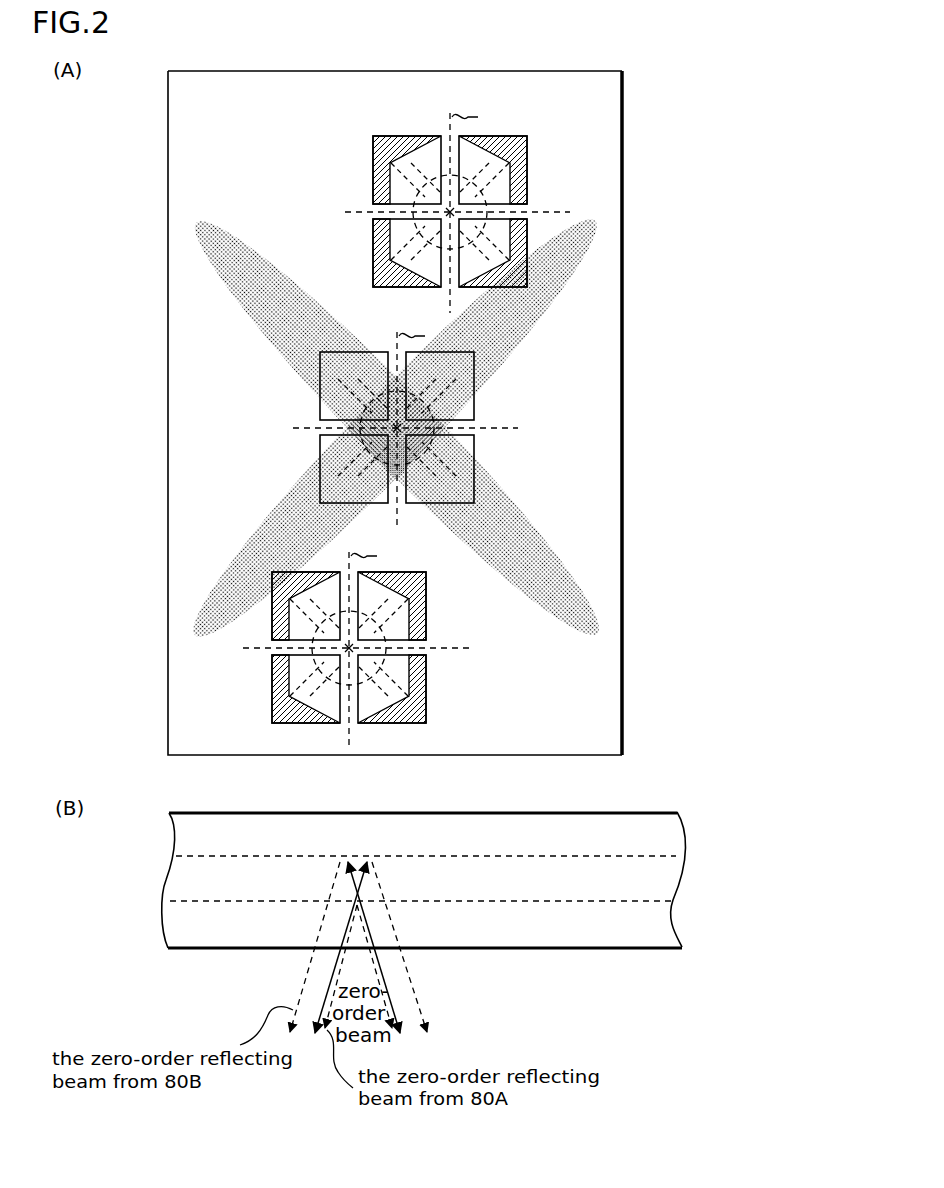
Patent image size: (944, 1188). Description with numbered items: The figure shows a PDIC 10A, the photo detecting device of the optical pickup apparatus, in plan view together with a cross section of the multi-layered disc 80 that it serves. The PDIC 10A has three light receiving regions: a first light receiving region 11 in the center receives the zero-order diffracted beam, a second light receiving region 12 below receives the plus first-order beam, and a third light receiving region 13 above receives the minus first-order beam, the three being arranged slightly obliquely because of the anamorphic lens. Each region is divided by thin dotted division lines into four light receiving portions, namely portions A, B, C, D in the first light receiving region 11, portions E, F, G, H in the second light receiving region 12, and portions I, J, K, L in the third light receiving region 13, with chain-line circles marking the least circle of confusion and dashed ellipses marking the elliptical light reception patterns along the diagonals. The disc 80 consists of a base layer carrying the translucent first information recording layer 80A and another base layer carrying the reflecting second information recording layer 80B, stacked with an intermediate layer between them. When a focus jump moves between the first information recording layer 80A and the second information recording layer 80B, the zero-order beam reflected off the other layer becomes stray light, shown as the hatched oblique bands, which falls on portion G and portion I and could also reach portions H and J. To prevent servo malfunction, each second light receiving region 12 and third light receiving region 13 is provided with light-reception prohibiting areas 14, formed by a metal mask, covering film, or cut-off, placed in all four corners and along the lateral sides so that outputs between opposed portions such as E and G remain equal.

In FIG. 2A, the PDIC 10A is at (395, 402).
In FIG. 2A, the first light receiving region 11 is at (415, 426).
In FIG. 2A, the second light receiving region 12 is at (364, 643).
In FIG. 2A, the third light receiving region 13 is at (466, 209).
In FIG. 2A, the light-reception prohibiting area 14 is at (372, 165).
In FIG. 2A, the light receiving portion A is at (474, 504).
In FIG. 2A, the light receiving portion B is at (322, 505).
In FIG. 2A, the light receiving portion C is at (322, 395).
In FIG. 2A, the light receiving portion D is at (474, 356).
In FIG. 2A, the light receiving portion E is at (426, 724).
In FIG. 2A, the light receiving portion F is at (272, 723).
In FIG. 2A, the light receiving portion G is at (272, 579).
In FIG. 2A, the light receiving portion H is at (426, 574).
In FIG. 2A, the light receiving portion I is at (527, 287).
In FIG. 2A, the light receiving portion J is at (373, 285).
In FIG. 2A, the light receiving portion K is at (372, 144).
In FIG. 2A, the light receiving portion L is at (527, 135).
In FIG. 2B, the multi-layered disc 80 is at (404, 880).
In FIG. 2B, the first information recording layer 80A is at (421, 890).
In FIG. 2B, the second information recording layer 80B is at (426, 846).